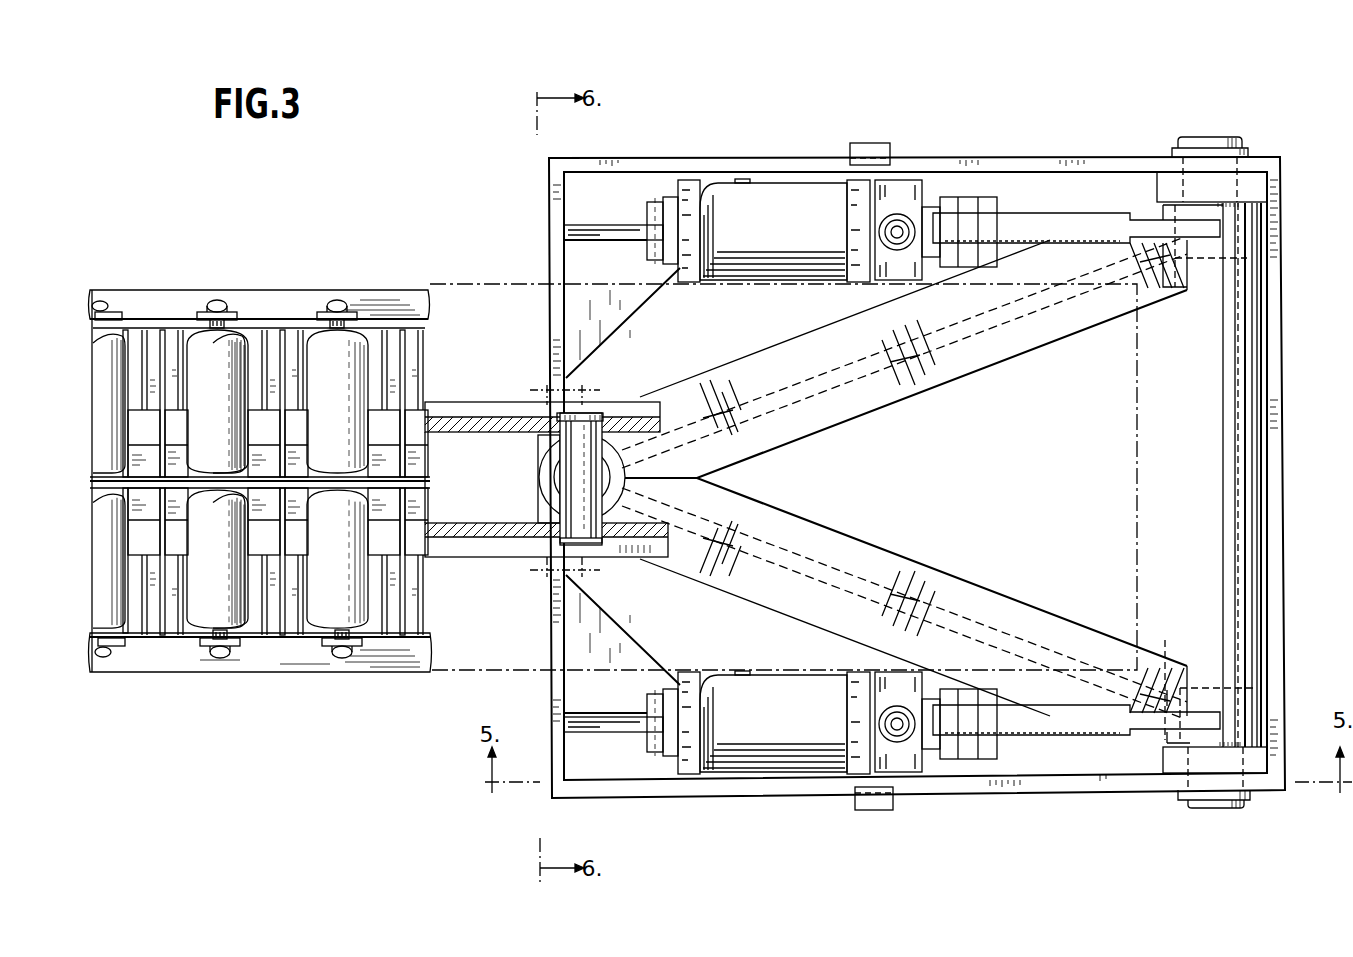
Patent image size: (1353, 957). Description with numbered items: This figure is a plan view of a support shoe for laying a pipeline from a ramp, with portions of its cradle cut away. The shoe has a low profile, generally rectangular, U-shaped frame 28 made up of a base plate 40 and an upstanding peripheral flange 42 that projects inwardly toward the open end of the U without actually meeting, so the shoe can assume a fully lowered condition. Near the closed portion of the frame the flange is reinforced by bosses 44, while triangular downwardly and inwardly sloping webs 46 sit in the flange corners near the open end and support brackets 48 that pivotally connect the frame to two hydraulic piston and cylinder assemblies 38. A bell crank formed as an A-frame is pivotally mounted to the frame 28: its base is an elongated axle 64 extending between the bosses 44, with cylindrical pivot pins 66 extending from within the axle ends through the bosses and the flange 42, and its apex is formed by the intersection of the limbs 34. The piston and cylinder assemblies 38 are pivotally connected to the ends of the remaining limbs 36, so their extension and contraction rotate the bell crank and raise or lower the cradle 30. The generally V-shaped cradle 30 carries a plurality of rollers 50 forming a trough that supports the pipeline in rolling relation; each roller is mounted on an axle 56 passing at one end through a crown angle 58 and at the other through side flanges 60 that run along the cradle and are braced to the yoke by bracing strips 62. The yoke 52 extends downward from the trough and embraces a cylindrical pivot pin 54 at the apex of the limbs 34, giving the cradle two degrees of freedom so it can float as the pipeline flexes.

The frame 28 is at (920, 474).
The cradle 30 is at (279, 475).
The limbs 34 is at (749, 372).
The limbs 36 is at (1022, 232).
The piston and cylinder assemblies 38 is at (756, 222).
The base plate 40 is at (663, 333).
The upstanding peripheral flange 42 is at (550, 163).
The bosses 44 is at (1266, 185).
The webs 46 is at (573, 267).
The brackets 48 is at (580, 232).
The rollers 50 is at (189, 425).
The yoke 52 is at (503, 398).
The pivot pin 54 is at (568, 462).
The axle 56 is at (217, 300).
The crown angle 58 is at (405, 474).
The side flanges 60 is at (378, 313).
The bracing strips 62 is at (415, 382).
The elongated axle 64 is at (1178, 365).
The pivot pins 66 is at (1208, 138).